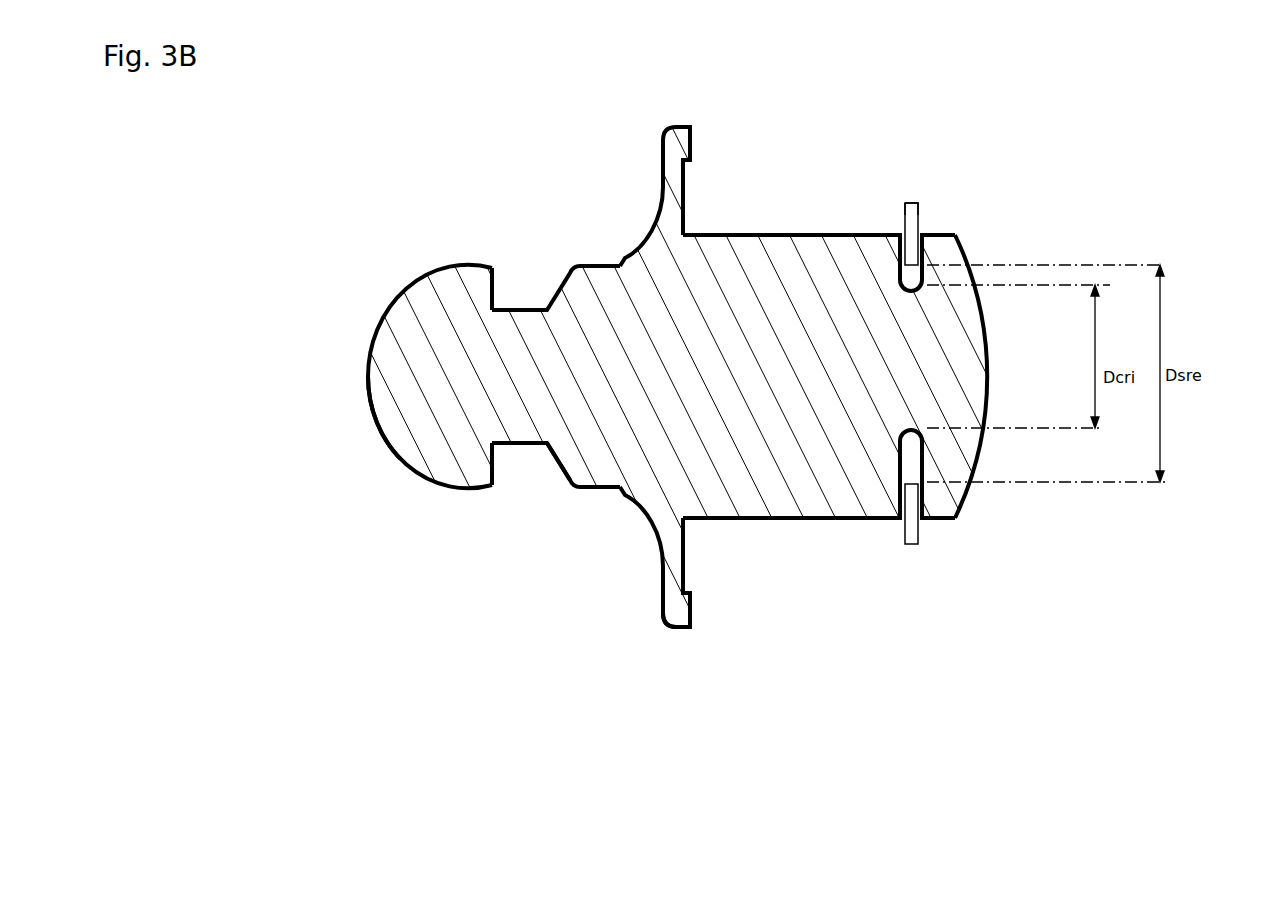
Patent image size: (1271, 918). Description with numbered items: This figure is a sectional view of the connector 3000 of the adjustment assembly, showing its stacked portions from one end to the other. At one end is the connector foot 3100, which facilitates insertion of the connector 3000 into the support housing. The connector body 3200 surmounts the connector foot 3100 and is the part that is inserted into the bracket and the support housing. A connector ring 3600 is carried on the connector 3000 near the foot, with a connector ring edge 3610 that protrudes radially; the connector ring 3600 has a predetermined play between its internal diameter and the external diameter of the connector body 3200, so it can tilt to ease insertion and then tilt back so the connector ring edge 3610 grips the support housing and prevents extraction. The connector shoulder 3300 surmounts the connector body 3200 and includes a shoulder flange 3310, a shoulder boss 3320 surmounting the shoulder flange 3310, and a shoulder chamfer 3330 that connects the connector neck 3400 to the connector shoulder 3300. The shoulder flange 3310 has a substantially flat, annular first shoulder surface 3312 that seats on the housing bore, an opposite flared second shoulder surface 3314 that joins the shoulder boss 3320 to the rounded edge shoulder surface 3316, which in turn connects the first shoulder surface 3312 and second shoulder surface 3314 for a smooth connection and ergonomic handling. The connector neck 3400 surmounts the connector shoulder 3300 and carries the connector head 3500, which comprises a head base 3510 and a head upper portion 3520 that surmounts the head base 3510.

The connector 3000 is at (312, 108).
The connector foot 3100 is at (1007, 353).
The connector body 3200 is at (800, 198).
The connector shoulder 3300 is at (705, 136).
The shoulder flange 3310 is at (633, 610).
The first shoulder surface 3312 is at (693, 586).
The second shoulder surface 3314 is at (662, 548).
The edge shoulder surface 3316 is at (684, 635).
The shoulder boss 3320 is at (575, 508).
The shoulder chamfer 3330 is at (638, 533).
The connector neck 3400 is at (518, 258).
The connector head 3500 is at (341, 373).
The head base 3510 is at (492, 465).
The head upper portion 3520 is at (373, 432).
The connector ring 3600 is at (935, 206).
The connector ring edge 3610 is at (913, 203).